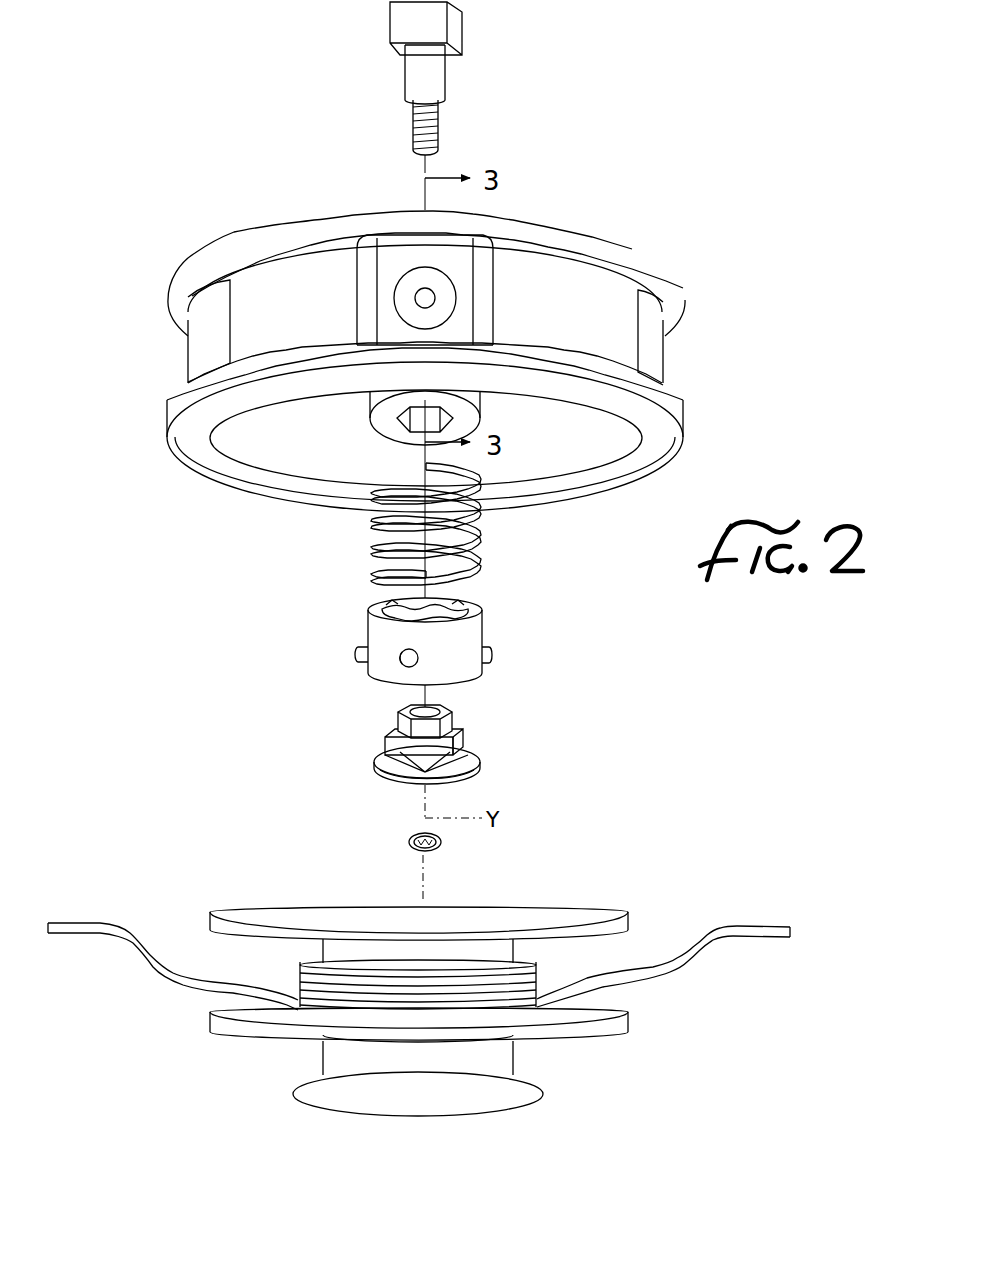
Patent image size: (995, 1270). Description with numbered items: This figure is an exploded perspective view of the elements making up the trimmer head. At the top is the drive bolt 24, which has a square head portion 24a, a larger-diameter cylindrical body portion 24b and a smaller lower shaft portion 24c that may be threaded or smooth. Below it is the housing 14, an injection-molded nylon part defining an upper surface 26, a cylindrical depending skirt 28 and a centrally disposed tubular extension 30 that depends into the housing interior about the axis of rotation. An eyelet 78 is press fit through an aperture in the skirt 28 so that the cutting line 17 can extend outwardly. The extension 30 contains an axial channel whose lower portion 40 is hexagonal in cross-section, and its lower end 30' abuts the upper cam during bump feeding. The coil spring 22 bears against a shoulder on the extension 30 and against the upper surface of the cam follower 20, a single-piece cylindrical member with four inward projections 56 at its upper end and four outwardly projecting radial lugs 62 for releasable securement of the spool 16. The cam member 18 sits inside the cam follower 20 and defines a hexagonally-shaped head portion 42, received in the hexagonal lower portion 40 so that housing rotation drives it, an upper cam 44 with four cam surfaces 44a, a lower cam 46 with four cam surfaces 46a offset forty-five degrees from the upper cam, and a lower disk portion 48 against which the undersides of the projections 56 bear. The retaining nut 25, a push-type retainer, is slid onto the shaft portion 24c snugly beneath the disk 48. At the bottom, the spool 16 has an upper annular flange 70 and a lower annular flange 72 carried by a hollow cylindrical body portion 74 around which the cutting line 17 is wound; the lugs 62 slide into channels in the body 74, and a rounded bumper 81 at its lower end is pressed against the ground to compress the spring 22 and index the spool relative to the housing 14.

The housing 14 is at (466, 344).
The spool 16 is at (441, 980).
The cutting line 17 is at (93, 921).
The cam member 18 is at (422, 758).
The cam follower 20 is at (402, 624).
The coil spring 22 is at (367, 537).
The drive bolt 24 is at (417, 78).
The square head portion 24a is at (393, 36).
The cylindrical body portion 24b is at (415, 83).
The lower shaft portion 24c is at (412, 137).
The retaining nut 25 is at (441, 848).
The upper surface 26 is at (603, 240).
The cylindrical depending skirt 28 is at (617, 310).
The tubular extension 30 is at (484, 417).
The lower end of tubular extension 30' is at (375, 420).
The lower portion of channel 40 is at (398, 425).
The head portion 42 is at (398, 720).
The upper cam 44 is at (458, 735).
The upper cam surfaces 44a is at (465, 742).
The lower cam 46 is at (465, 760).
The lower cam surfaces 46a is at (395, 768).
The lower disk portion 48 is at (465, 780).
The projections 56 is at (385, 607).
The radial lugs 62 is at (484, 650).
The upper annular flange 70 is at (565, 907).
The lower annular flange 72 is at (612, 1033).
The hollow cylindrical body portion 74 is at (512, 962).
The eyelets 78 is at (402, 296).
The rounded bumper 81 is at (513, 1095).